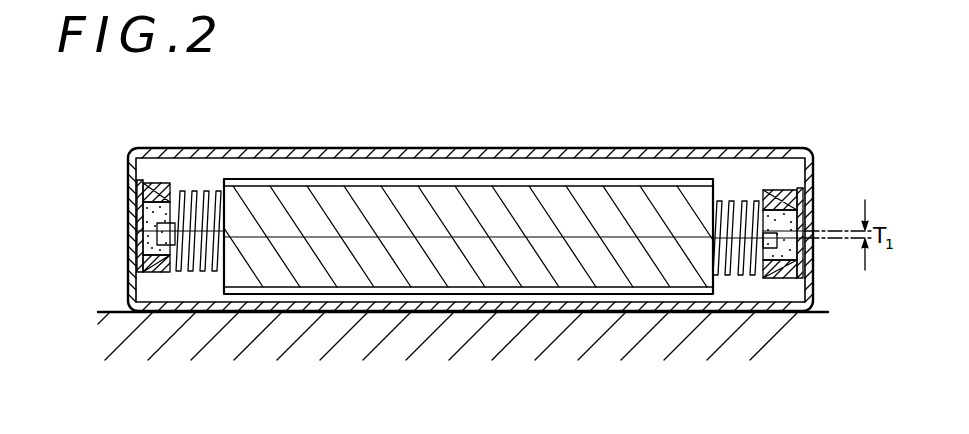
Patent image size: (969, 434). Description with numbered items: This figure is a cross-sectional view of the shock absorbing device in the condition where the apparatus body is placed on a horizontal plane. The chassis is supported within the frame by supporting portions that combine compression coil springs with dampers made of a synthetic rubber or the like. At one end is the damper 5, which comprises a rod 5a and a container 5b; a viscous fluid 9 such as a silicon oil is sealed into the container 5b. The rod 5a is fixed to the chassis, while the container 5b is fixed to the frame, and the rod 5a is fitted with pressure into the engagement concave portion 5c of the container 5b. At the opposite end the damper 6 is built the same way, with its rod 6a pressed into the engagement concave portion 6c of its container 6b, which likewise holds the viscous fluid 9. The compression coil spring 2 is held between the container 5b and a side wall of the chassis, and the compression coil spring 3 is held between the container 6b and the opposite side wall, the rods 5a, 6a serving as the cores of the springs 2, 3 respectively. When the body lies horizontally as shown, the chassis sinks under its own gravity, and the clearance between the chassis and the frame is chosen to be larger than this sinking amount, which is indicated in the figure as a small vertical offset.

The first coil spring 2 is at (196, 198).
The second coil spring 3 is at (732, 202).
The first end fitting 5 is at (141, 300).
The lower portion of first end fitting 5a is at (165, 274).
The body of first end fitting 5b is at (150, 183).
The upper portion of first end fitting 5c is at (163, 187).
The second end fitting 6 is at (789, 195).
The lower portion of second end fitting 6a is at (772, 280).
The body of second end fitting 6b is at (786, 280).
The upper portion of second end fitting 6c is at (772, 192).
The center axis line 9 is at (142, 231).